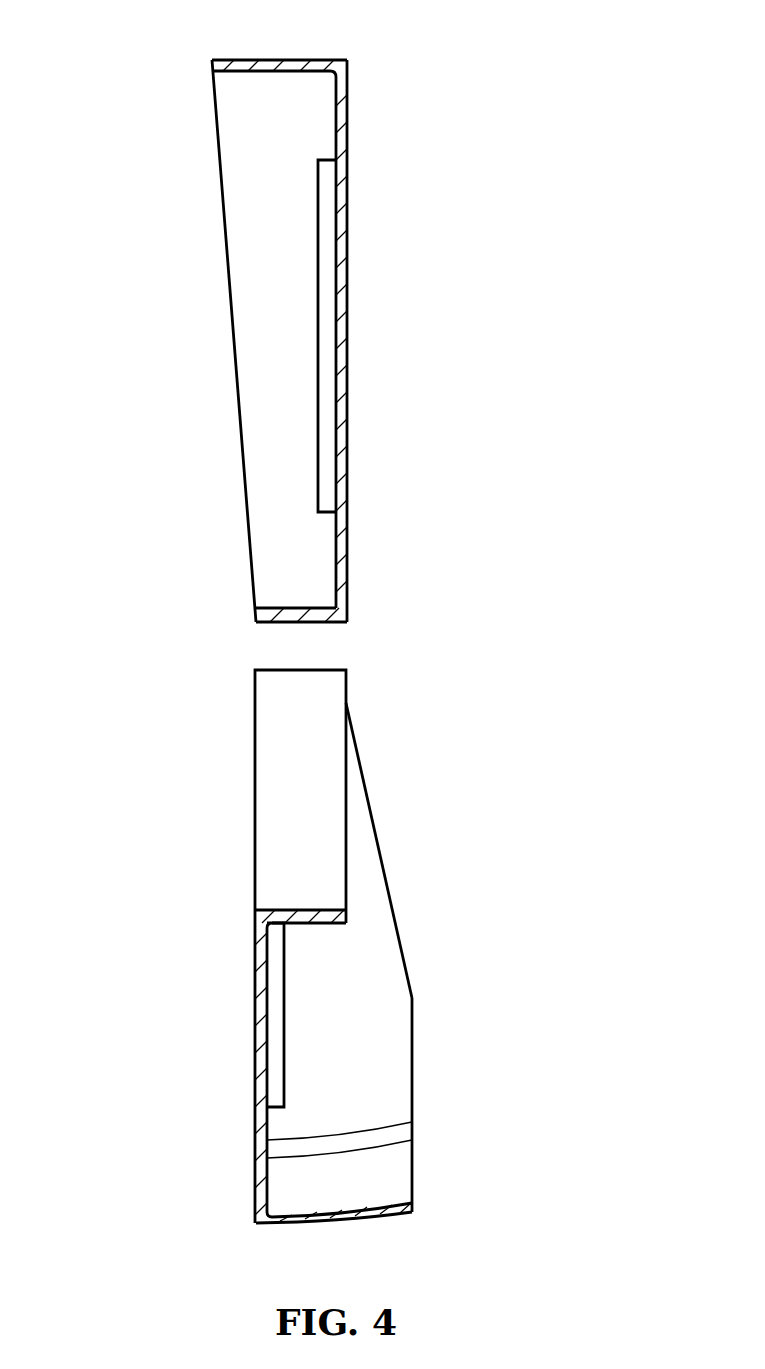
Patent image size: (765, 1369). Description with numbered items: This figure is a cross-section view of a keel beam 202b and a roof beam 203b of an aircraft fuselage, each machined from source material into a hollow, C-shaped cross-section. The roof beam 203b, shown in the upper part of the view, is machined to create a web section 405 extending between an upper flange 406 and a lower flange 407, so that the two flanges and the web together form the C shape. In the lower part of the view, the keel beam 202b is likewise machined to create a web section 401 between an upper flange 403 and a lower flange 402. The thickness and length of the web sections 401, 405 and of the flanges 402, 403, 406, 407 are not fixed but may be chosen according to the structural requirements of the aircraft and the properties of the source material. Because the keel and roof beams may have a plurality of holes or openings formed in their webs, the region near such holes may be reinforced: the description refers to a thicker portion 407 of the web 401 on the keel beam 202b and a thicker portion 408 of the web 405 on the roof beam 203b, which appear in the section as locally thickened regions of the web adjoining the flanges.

The roof beam 203b is at (168, 267).
The keel beam 202b is at (228, 749).
The web section 401 is at (256, 1130).
The lower flange 402 is at (340, 1224).
The upper flange 403 is at (265, 825).
The web section 405 is at (348, 560).
The upper flange 406 is at (263, 58).
The lower flange / thicker portion 407 is at (318, 606).
The thicker portion 408 is at (317, 215).